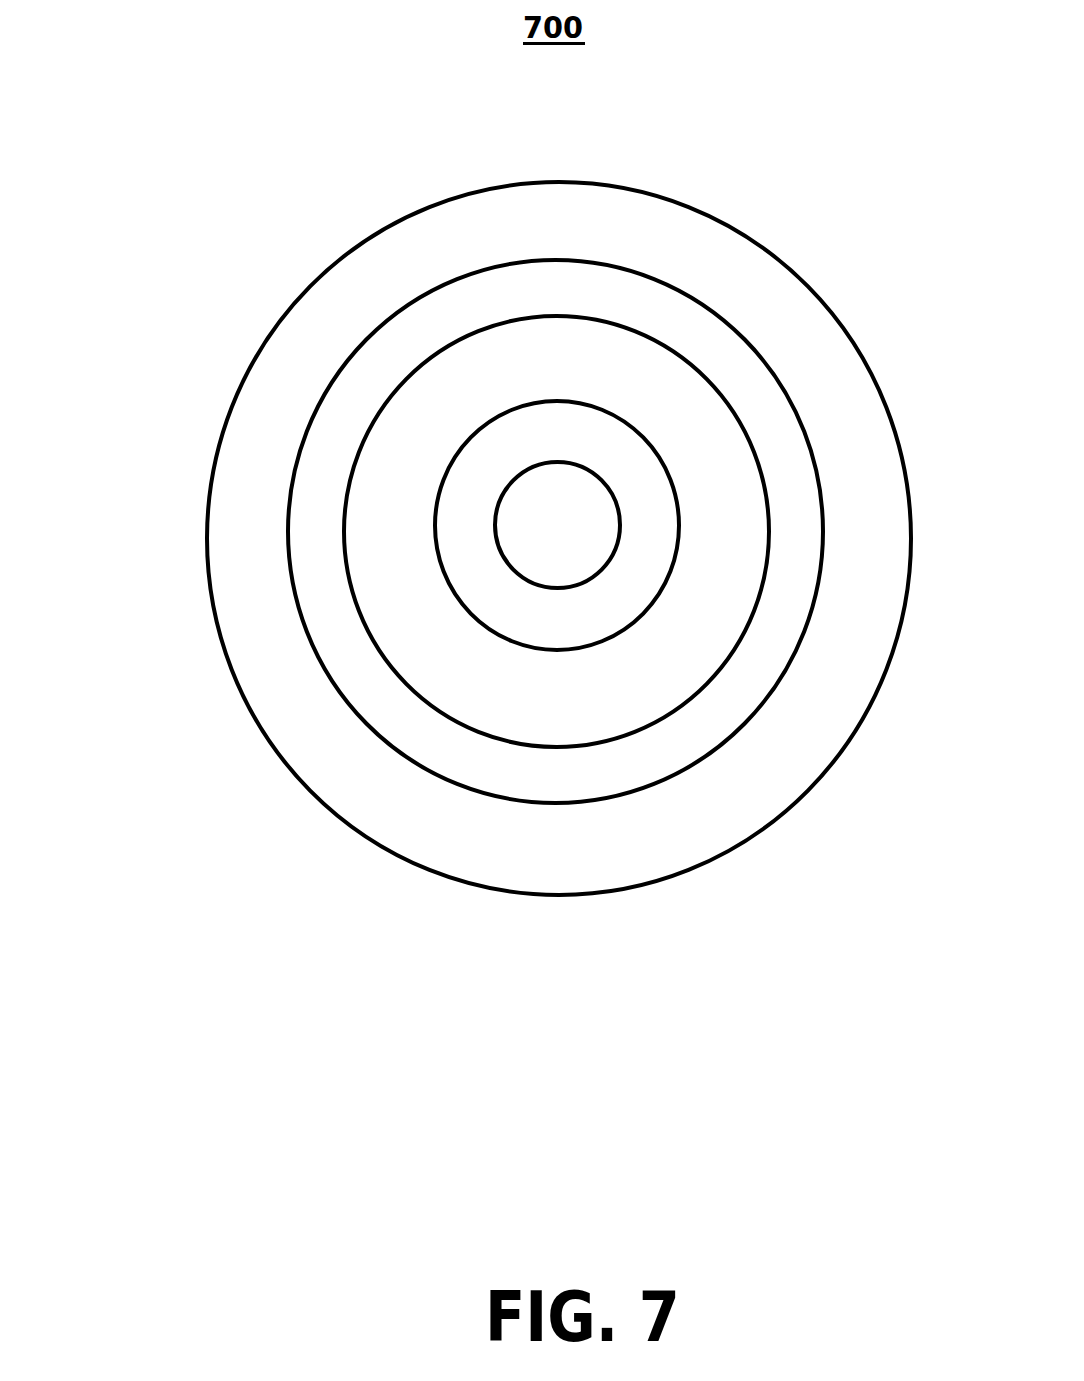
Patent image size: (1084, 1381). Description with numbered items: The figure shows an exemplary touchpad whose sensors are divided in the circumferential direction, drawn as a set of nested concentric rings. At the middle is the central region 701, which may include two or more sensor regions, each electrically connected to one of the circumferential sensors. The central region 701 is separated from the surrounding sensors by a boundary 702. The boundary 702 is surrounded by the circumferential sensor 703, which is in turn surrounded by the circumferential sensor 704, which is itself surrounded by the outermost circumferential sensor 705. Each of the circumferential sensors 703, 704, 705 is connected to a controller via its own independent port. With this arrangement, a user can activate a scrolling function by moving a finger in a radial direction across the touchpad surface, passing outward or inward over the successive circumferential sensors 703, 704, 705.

The central region 701 is at (530, 512).
The boundary 702 is at (475, 562).
The circumferential sensor 703 is at (455, 666).
The circumferential sensor 704 is at (517, 767).
The circumferential sensor 705 is at (613, 845).